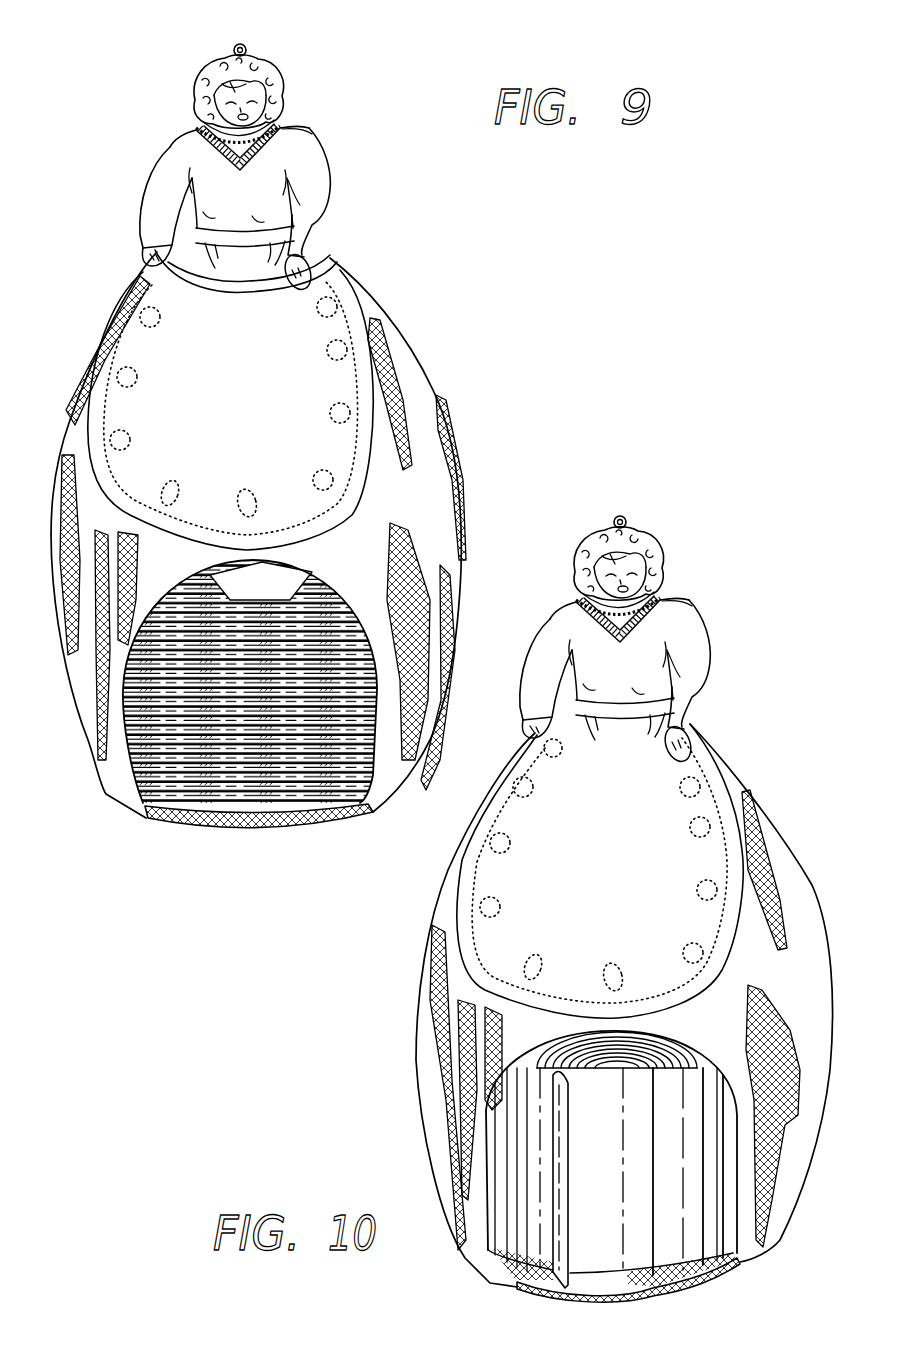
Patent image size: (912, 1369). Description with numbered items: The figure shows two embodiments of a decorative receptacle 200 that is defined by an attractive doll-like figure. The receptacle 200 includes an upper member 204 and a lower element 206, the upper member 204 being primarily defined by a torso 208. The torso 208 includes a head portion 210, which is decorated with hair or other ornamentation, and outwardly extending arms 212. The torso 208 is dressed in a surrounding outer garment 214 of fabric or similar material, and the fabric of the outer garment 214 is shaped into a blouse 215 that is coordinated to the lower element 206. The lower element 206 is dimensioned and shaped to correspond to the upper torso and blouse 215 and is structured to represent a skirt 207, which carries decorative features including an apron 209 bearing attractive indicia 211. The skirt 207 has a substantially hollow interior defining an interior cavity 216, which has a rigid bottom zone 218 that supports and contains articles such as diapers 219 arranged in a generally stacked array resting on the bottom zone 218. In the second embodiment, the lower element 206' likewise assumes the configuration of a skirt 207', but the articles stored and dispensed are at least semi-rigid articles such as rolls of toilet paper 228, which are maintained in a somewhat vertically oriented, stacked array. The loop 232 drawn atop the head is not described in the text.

In FIG. 9, the receptacle 200 is at (357, 198).
In FIG. 10, the receptacle 200 is at (735, 665).
In FIG. 9, the upper member 204 is at (167, 147).
In FIG. 10, the upper member 204 is at (661, 622).
In FIG. 9, the lower element 206 is at (280, 564).
In FIG. 10, the lower element 206' is at (578, 1023).
In FIG. 9, the skirt 207 is at (280, 534).
In FIG. 10, the skirt 207' is at (565, 1005).
In FIG. 9, the torso 208 is at (239, 194).
In FIG. 10, the torso 208 is at (619, 666).
In FIG. 9, the apron 209 is at (230, 410).
In FIG. 10, the apron 209 is at (600, 871).
In FIG. 9, the head portion 210 is at (267, 73).
In FIG. 10, the head portion 210 is at (657, 539).
In FIG. 9, the indicia 211 is at (240, 490).
In FIG. 10, the indicia 211 is at (603, 970).
In FIG. 9, the arms 212 is at (150, 210).
In FIG. 10, the arms 212 is at (661, 667).
In FIG. 9, the outer garment 214 is at (312, 131).
In FIG. 10, the outer garment 214 is at (593, 552).
In FIG. 9, the blouse 215 is at (287, 200).
In FIG. 10, the blouse 215 is at (739, 635).
In FIG. 9, the interior cavity 216 is at (250, 706).
In FIG. 10, the interior cavity 216 is at (596, 1159).
In FIG. 9, the bottom zone 218 is at (213, 817).
In FIG. 10, the bottom zone 218 is at (542, 1276).
In FIG. 9, the diapers 219 is at (273, 713).
In FIG. 10, the rolls of toilet paper 228 is at (532, 1162).
In FIG. 9, the hanging loop 232 is at (235, 47).